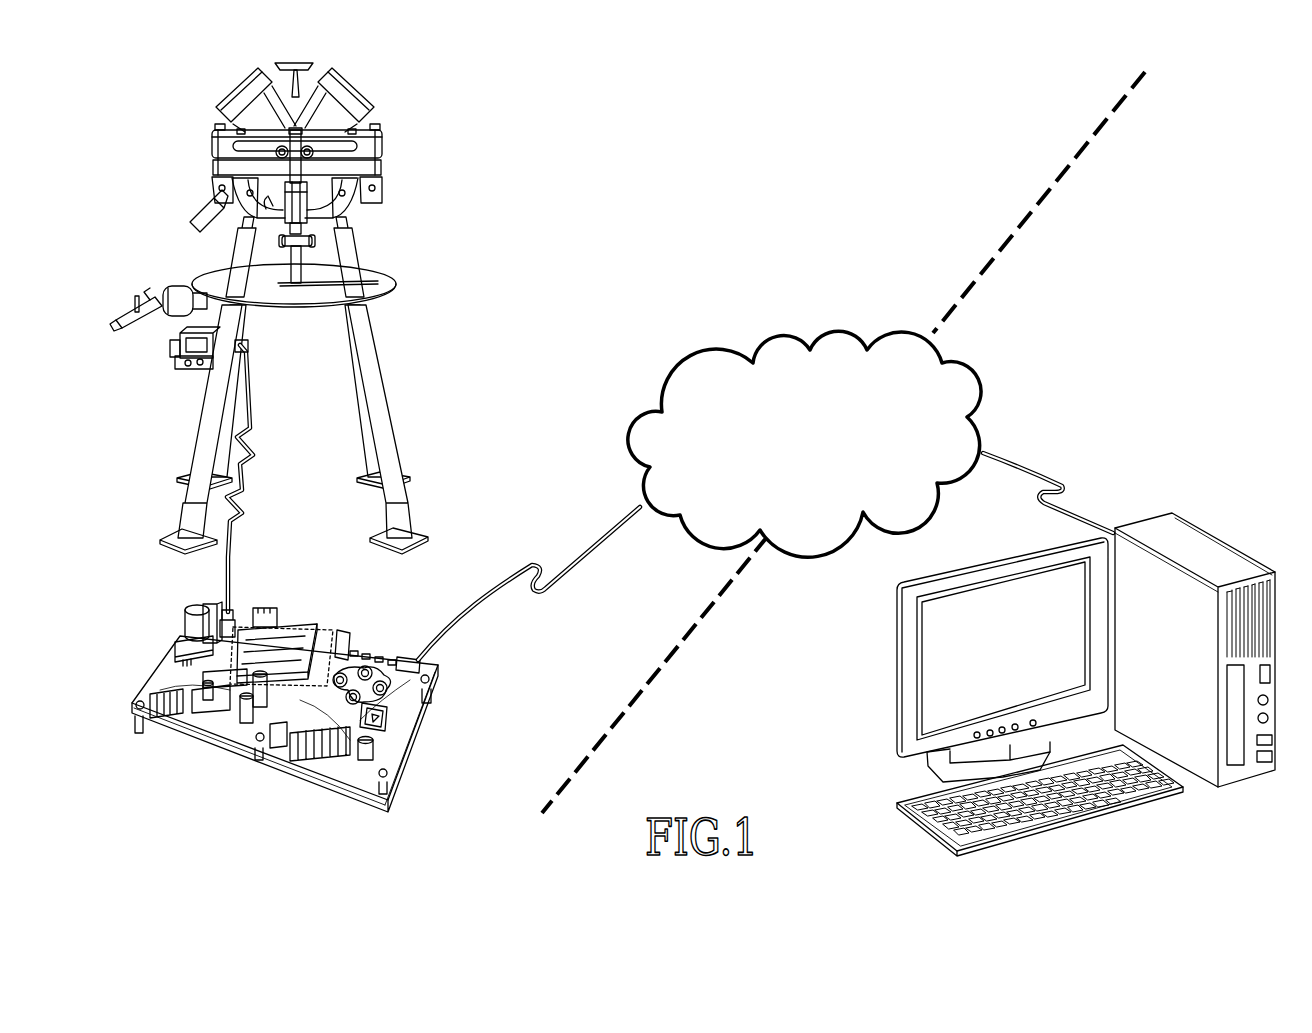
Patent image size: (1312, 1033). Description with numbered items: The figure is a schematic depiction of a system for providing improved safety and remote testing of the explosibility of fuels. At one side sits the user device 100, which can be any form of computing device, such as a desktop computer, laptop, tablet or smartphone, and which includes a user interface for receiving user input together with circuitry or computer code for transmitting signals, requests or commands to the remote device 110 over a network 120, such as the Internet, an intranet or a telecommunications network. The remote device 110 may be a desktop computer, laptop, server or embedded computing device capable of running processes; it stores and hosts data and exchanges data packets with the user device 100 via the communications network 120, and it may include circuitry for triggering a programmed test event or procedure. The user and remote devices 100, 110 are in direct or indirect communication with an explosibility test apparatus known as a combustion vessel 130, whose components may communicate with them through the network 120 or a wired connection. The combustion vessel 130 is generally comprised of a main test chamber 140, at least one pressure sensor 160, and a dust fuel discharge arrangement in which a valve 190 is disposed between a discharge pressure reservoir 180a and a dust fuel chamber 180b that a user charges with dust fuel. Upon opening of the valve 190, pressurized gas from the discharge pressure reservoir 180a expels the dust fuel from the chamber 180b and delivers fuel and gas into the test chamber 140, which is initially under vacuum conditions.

The user device 100 is at (1228, 528).
The remote device 110 is at (142, 648).
The network 120 is at (817, 454).
The combustion vessel 130 is at (170, 84).
The main test chamber 140 is at (353, 127).
The pressure sensor 160 is at (127, 298).
The discharge pressure reservoir 180a is at (160, 318).
The dust fuel chamber 180b is at (300, 272).
The valve 190 is at (195, 368).